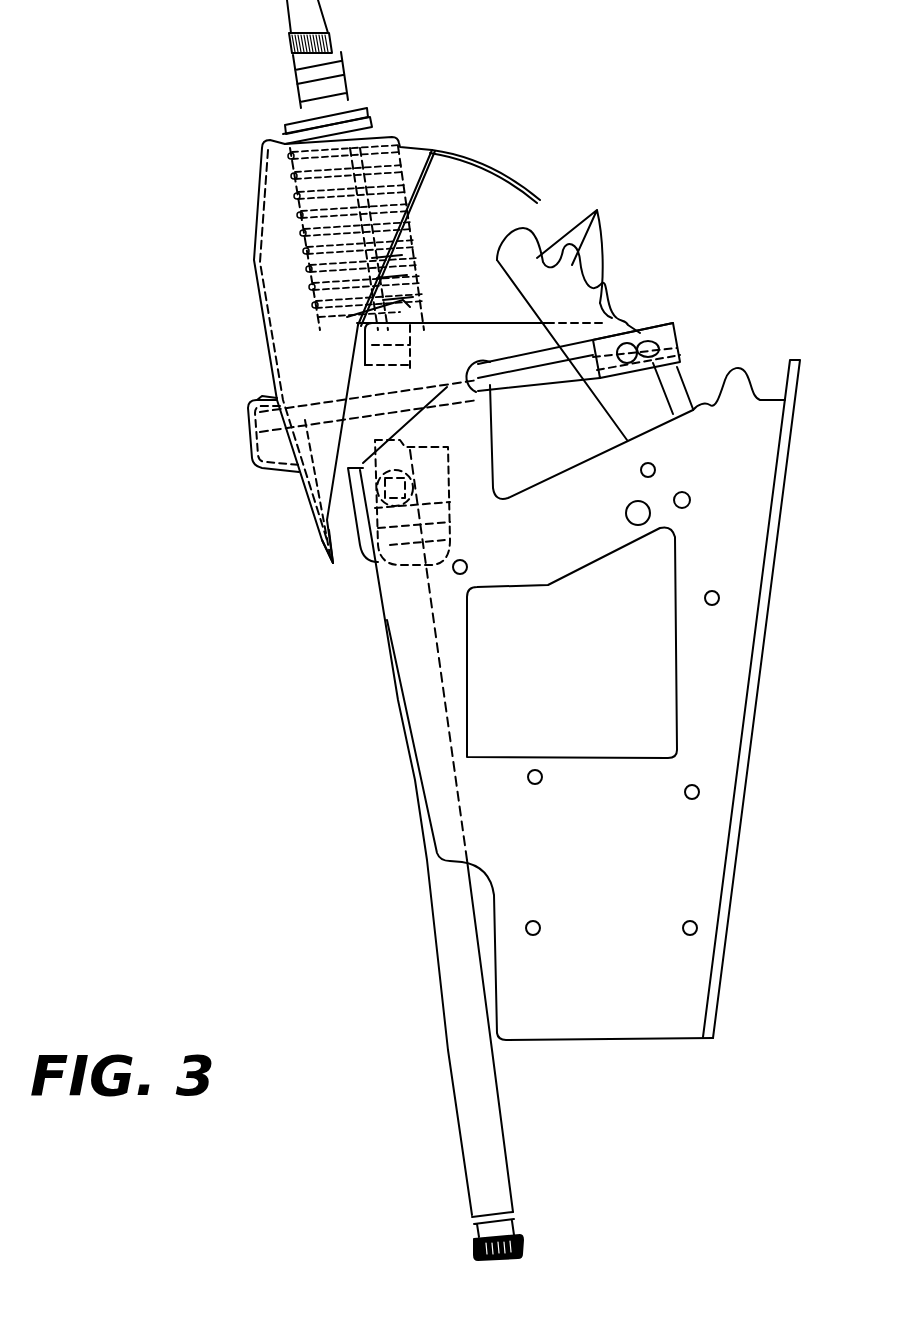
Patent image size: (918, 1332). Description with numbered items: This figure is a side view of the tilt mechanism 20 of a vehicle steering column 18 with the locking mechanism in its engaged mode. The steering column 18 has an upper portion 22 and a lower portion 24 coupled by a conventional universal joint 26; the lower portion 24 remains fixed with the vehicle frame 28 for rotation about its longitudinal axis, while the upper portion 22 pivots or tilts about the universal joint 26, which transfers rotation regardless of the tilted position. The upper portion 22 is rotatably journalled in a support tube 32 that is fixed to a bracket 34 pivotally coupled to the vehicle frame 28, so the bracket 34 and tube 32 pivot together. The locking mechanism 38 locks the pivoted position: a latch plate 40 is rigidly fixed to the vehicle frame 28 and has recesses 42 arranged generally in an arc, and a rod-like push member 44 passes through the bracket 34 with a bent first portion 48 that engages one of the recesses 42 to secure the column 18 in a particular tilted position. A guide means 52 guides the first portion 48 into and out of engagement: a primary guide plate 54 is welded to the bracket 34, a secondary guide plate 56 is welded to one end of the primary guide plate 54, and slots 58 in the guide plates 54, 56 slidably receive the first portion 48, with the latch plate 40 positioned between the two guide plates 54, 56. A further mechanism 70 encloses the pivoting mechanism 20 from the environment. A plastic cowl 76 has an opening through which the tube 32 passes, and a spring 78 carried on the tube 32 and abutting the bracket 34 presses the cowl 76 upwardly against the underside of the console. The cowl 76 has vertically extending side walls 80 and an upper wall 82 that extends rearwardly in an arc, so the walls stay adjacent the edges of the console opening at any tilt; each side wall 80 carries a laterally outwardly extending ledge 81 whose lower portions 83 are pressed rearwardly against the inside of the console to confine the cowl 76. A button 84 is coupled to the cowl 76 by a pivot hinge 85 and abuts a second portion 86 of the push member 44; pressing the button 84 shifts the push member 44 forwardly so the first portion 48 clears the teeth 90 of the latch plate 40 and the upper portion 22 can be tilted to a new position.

The steering column 18 is at (594, 587).
The mechanism 20 is at (359, 567).
The upper portion 22 is at (340, 80).
The lower portion 24 is at (403, 630).
The universal joint 26 is at (465, 530).
The vehicle frame 28 is at (770, 503).
The support tube 32 is at (302, 205).
The bracket 34 is at (397, 295).
The locking mechanism 38 is at (624, 298).
The latch plate 40 is at (523, 227).
The recesses 42 is at (603, 207).
The push member 44 is at (523, 377).
The first portion 48 is at (689, 400).
The guide means 52 is at (755, 334).
The primary guide plate 54 is at (484, 323).
The secondary guide plate 56 is at (622, 377).
The slots 58 is at (677, 338).
The mechanism 70 is at (334, 343).
The cowl 76 is at (257, 182).
The spring 78 is at (400, 264).
The side walls 80 is at (400, 190).
The ledge 81 is at (410, 217).
The upper wall 82 is at (443, 147).
The lower portions 83 is at (313, 490).
The button 84 is at (257, 467).
The pivot hinge 85 is at (307, 540).
The second portion 86 is at (260, 403).
The teeth 90 is at (612, 302).